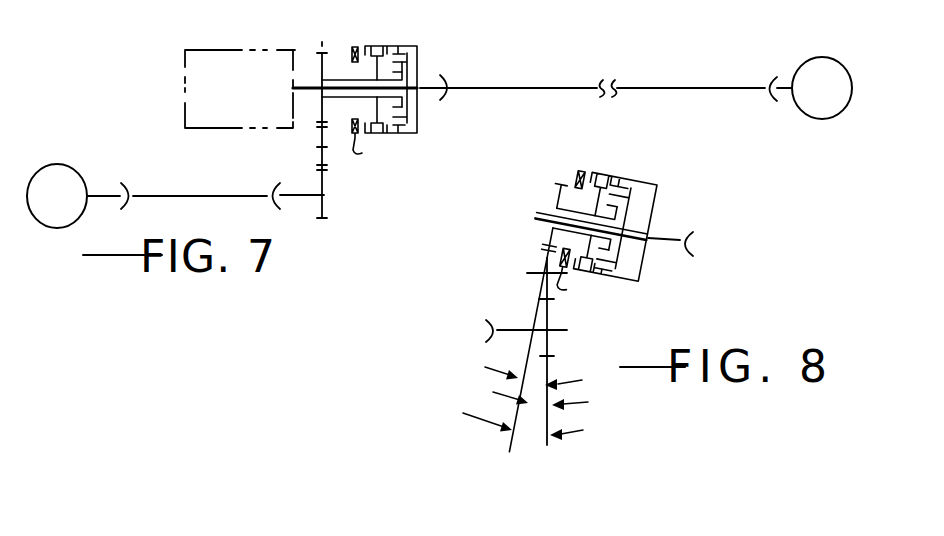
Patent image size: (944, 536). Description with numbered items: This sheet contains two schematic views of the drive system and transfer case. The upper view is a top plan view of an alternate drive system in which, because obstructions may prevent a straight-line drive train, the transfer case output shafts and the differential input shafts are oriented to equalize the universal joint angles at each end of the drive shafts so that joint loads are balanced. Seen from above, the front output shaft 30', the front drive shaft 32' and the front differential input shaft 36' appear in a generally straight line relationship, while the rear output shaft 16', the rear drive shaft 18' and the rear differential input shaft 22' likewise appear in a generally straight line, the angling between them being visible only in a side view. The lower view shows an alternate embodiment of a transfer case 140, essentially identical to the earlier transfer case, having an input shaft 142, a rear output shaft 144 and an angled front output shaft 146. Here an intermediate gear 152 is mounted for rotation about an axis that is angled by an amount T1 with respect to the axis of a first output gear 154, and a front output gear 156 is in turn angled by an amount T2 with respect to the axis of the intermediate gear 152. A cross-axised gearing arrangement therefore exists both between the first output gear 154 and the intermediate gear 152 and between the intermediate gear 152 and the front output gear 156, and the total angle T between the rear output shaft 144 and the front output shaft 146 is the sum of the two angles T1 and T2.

In FIG. 7, the front differential input shaft 36' is at (80, 173).
In FIG. 7, the front drive shaft 32' is at (222, 176).
In FIG. 7, the front output shaft 30' is at (328, 158).
In FIG. 7, the rear output shaft 16' is at (462, 59).
In FIG. 7, the rear drive shaft 18' is at (608, 57).
In FIG. 7, the rear differential input shaft 22' is at (788, 67).
In FIG. 8, the transfer case 140 is at (668, 218).
In FIG. 8, the input shaft 142 is at (546, 212).
In FIG. 8, the rear output shaft 144 is at (672, 240).
In FIG. 8, the front output shaft 146 is at (508, 327).
In FIG. 8, the intermediate gear 152 is at (548, 287).
In FIG. 8, the first output gear 154 is at (553, 203).
In FIG. 8, the front output gear 156 is at (548, 318).
In FIG. 8, the angle between first output gear axis and intermediate gear axis T1 is at (532, 413).
In FIG. 8, the angle between intermediate gear axis and front output gear axis T2 is at (543, 408).
In FIG. 8, the total angle T is at (528, 437).